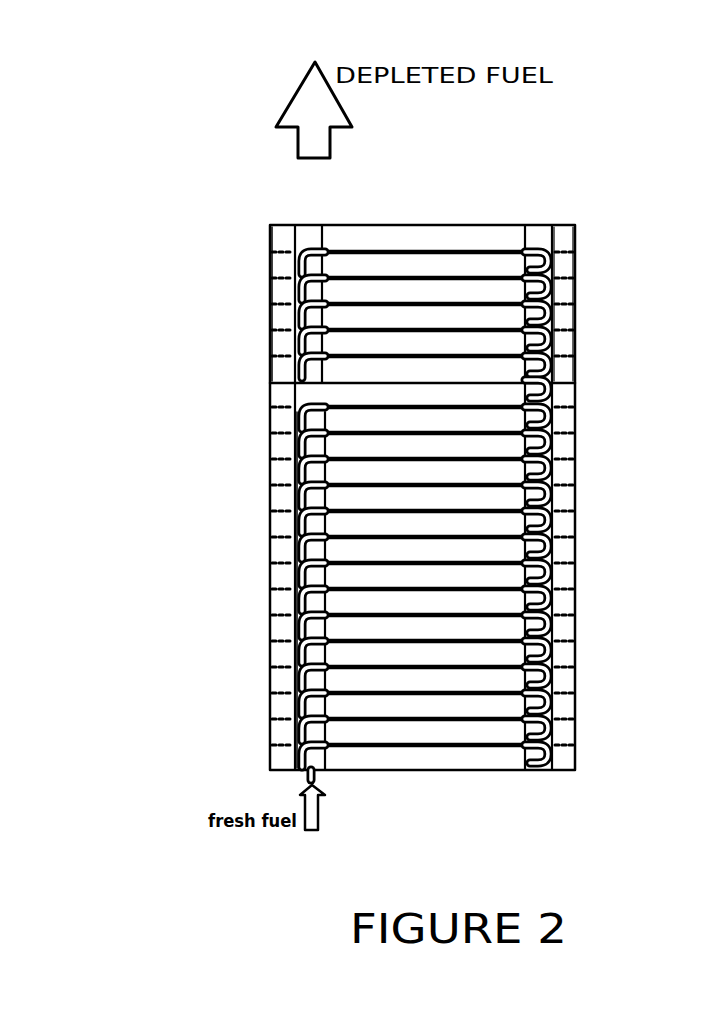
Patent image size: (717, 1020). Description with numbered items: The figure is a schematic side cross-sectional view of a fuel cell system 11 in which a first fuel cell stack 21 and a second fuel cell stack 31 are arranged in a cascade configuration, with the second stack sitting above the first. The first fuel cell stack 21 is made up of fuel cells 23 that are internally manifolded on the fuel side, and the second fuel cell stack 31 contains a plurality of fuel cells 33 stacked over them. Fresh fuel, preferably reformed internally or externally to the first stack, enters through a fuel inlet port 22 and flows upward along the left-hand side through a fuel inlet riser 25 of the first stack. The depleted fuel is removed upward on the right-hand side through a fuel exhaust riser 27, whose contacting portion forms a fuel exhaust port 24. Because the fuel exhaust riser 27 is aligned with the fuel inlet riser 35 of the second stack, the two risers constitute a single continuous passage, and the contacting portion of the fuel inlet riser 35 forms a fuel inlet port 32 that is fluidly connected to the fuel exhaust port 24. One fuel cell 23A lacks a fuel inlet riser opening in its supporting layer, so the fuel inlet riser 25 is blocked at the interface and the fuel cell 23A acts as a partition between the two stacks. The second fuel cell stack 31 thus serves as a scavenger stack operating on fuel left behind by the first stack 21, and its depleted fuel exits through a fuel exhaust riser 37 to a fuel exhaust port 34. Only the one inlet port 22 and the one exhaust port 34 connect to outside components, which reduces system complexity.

The fuel cell system 11 is at (443, 178).
The first fuel cell stack 21 is at (607, 772).
The fuel inlet port 22 is at (320, 778).
The fuel cells 23 is at (270, 622).
The fuel cell with blocked fuel inlet riser channel 23A is at (270, 394).
The fuel exhaust port 24 is at (547, 393).
The fuel inlet riser 25 is at (299, 483).
The fuel exhaust riser 27 is at (549, 457).
The second fuel cell stack 31 is at (602, 225).
The fuel inlet port 32 is at (550, 380).
The fuel cells 33 is at (270, 340).
The fuel exhaust port 34 is at (305, 220).
The fuel inlet riser 35 is at (556, 226).
The fuel exhaust riser 37 is at (270, 224).